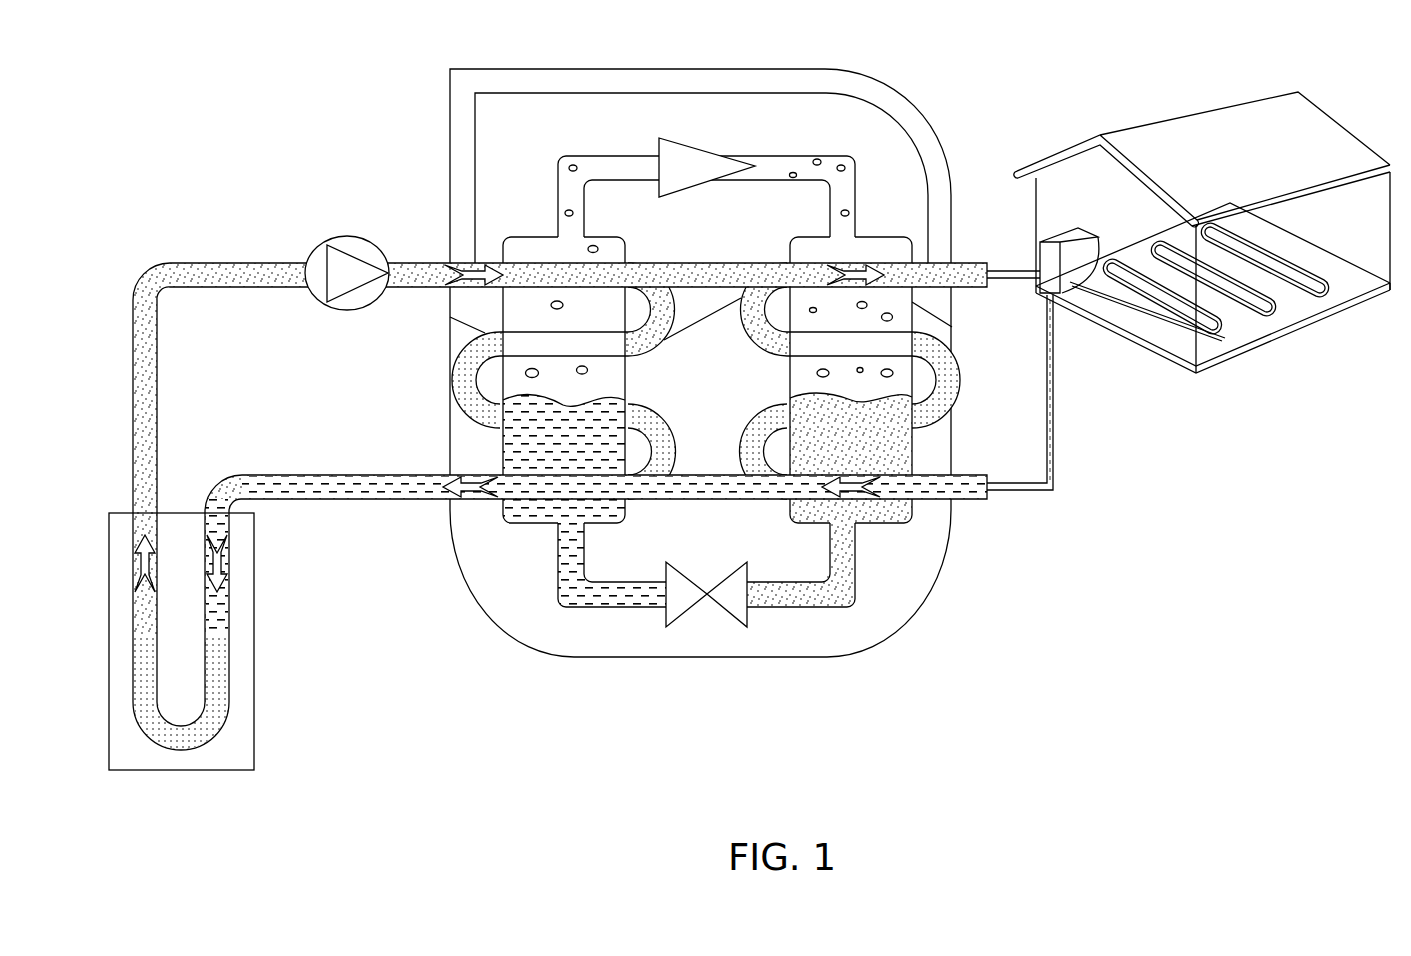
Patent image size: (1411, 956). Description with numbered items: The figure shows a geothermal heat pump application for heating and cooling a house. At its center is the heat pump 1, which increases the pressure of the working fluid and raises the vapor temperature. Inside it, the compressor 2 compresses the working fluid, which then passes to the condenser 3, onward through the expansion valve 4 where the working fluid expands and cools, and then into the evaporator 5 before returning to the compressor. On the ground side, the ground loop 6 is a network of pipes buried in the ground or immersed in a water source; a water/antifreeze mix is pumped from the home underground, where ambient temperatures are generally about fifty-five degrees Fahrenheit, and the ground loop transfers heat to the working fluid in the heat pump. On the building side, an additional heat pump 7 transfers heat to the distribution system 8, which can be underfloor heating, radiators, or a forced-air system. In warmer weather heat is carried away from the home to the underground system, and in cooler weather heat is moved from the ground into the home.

The heat pump 1 is at (520, 69).
The compressor 2 is at (697, 163).
The condenser 3 is at (897, 455).
The expansion valve 4 is at (733, 600).
The evaporator 5 is at (513, 453).
The ground loop 6 is at (254, 642).
The additional heat pump 7 is at (1050, 255).
The distribution system 8 is at (1278, 333).